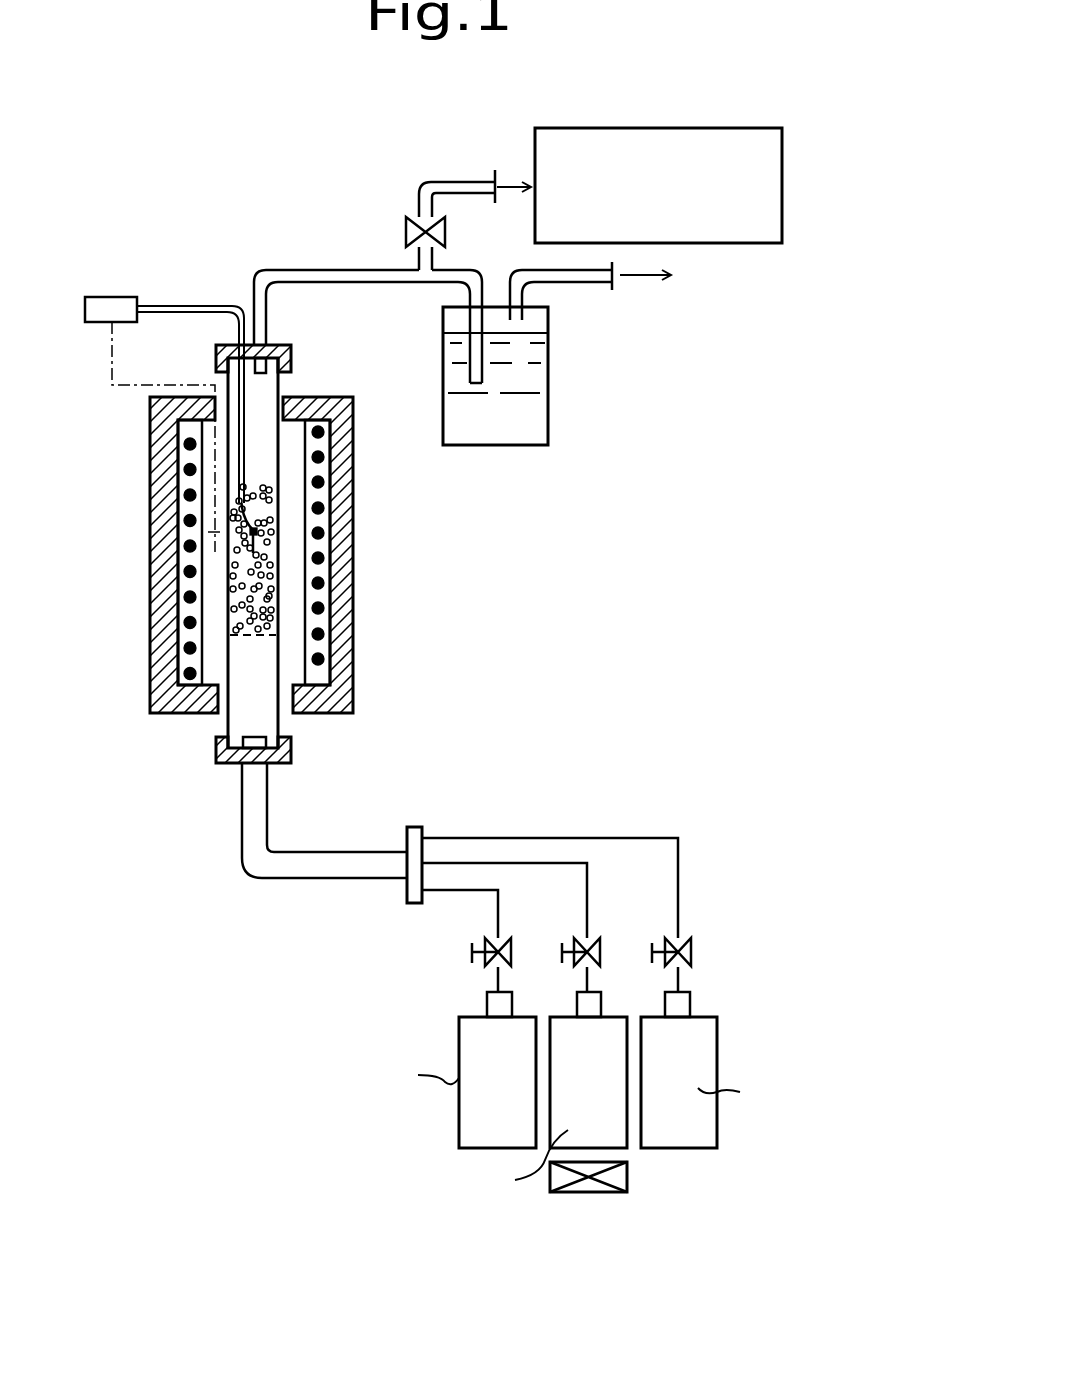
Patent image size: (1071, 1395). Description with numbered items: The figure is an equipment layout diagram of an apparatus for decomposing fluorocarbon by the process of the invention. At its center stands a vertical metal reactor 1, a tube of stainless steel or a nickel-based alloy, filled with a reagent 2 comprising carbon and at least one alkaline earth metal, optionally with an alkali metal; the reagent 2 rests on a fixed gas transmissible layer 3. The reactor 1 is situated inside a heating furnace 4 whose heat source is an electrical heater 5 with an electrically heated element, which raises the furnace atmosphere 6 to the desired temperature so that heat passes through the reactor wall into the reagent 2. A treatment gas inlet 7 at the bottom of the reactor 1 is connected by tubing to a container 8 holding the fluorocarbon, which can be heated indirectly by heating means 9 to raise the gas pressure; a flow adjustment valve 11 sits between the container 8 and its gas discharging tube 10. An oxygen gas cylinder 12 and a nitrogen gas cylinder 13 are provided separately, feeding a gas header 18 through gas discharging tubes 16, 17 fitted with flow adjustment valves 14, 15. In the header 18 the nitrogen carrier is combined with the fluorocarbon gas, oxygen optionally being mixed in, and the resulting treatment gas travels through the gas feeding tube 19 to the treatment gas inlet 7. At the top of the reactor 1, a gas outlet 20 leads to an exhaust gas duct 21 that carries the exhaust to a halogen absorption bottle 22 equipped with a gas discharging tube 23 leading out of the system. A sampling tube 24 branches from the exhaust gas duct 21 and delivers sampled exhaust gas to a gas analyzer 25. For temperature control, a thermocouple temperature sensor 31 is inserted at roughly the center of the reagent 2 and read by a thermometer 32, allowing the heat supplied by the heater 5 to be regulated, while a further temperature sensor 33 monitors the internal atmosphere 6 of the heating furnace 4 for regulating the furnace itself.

The metal reactor 1 is at (280, 657).
The reagent 2 is at (266, 598).
The fixed gas transmissible layer 3 is at (249, 639).
The heating furnace 4 is at (163, 597).
The electrical heater 5 is at (190, 567).
The furnace atmosphere 6 is at (210, 635).
The treatment gas inlet 7 is at (258, 735).
The container 8 is at (603, 1017).
The heating means 9 is at (627, 1177).
The gas discharging tube 10 is at (587, 890).
The flow adjustment valve 11 is at (562, 960).
The oxygen gas cylinder 12 is at (518, 1017).
The nitrogen gas cylinder 13 is at (695, 1017).
The flow adjustment valve 14 is at (472, 950).
The flow adjustment valve 15 is at (652, 960).
The gas discharging tube 16 is at (498, 900).
The gas discharging tube 17 is at (678, 875).
The gas header 18 is at (407, 838).
The gas feeding tube 19 is at (296, 852).
The gas outlet 20 is at (260, 374).
The exhaust gas duct 21 is at (325, 270).
The halogen absorption bottle 22 is at (548, 418).
The gas discharging tube 23 is at (540, 270).
The sampling tube 24 is at (425, 182).
The gas analyzer 25 is at (782, 190).
The temperature sensor 31 is at (257, 542).
The thermometer 32 is at (85, 312).
The temperature sensor 33 is at (213, 540).